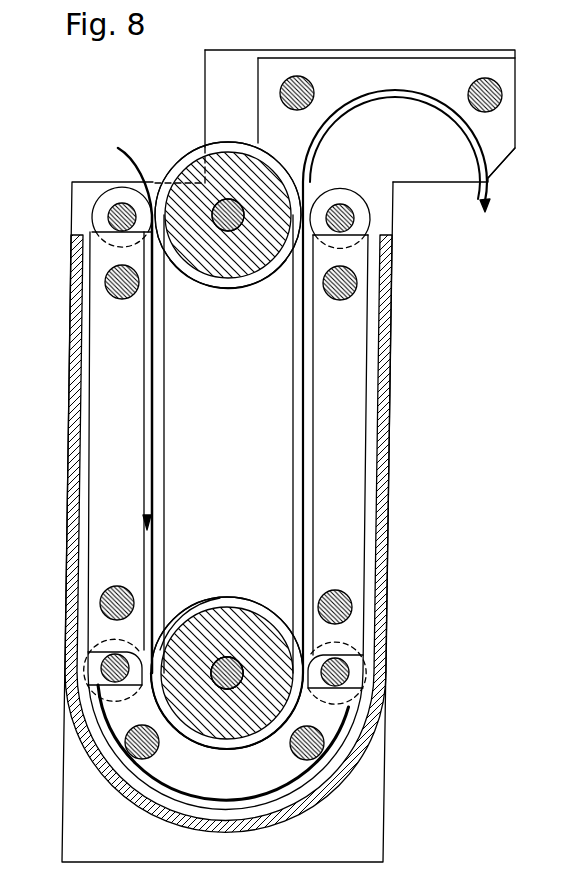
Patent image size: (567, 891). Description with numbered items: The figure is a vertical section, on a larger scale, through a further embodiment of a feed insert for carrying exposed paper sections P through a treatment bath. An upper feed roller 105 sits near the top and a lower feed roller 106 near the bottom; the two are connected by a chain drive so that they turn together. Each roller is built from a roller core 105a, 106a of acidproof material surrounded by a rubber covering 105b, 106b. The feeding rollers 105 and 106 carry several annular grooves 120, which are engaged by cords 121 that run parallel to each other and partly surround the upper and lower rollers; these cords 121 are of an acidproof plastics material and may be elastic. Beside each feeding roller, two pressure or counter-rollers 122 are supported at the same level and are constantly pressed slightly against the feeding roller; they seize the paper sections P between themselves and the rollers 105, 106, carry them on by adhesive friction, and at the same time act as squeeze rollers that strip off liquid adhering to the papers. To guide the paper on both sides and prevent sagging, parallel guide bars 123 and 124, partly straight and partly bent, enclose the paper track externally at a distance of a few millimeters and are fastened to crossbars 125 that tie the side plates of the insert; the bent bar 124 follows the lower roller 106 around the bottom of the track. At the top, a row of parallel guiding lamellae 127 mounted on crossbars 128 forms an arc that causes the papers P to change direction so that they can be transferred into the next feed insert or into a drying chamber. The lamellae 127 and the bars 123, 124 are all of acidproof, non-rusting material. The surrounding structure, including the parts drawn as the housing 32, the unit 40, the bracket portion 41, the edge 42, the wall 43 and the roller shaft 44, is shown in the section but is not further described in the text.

The housing frame 32 is at (73, 413).
The transport unit 40 is at (238, 433).
The bracket 41 is at (205, 90).
The plate edge 42 is at (512, 148).
The hatched wall 43 is at (72, 249).
The roller shaft 44 is at (229, 222).
The upper feed roller 105 is at (207, 151).
The roller core 105a is at (222, 168).
The rubber covering 105b is at (237, 292).
The lower feed roller 106 is at (229, 595).
The roller core 106a is at (222, 726).
The rubber covering 106b is at (207, 600).
The annular groove 120 is at (258, 284).
The cord 121 is at (294, 478).
The pressure roller 122 is at (97, 208).
The guide bar 123 is at (103, 334).
The guide bar 124 is at (287, 786).
The crossbar 125 is at (105, 288).
The guiding lamella 127 is at (391, 72).
The crossbar 128 is at (297, 76).
The paper section P is at (168, 498).